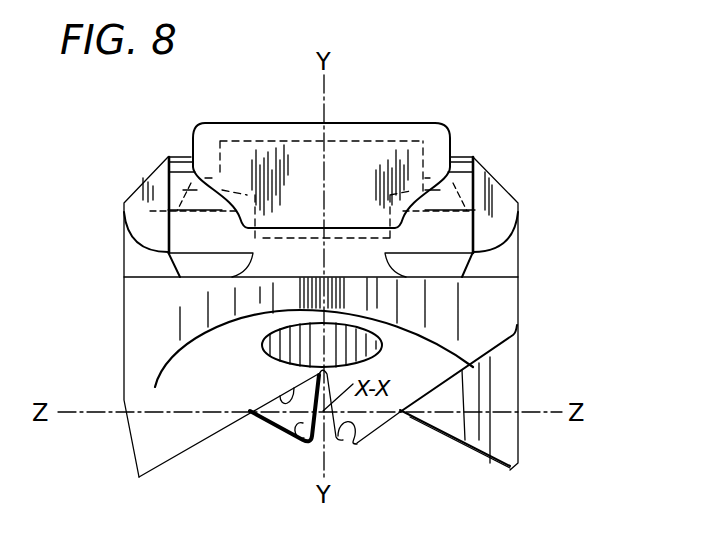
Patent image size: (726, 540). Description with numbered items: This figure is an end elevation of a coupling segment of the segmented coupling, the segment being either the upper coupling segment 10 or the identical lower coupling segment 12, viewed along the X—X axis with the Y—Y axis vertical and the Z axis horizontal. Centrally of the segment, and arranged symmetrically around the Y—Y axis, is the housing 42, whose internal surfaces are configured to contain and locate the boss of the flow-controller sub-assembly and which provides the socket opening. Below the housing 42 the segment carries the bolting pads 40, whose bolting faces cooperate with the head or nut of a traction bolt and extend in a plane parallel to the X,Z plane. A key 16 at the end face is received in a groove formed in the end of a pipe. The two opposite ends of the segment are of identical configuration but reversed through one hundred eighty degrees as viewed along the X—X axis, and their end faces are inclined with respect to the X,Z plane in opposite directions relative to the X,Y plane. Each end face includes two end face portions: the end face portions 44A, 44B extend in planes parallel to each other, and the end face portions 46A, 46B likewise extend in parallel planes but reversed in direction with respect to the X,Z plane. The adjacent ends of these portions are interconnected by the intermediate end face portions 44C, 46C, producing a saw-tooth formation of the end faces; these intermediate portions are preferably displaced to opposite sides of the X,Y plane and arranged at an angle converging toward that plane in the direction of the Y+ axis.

The upper coupling segment 10 is at (371, 317).
The lower coupling segment 12 is at (519, 249).
The key 16 is at (513, 371).
The bolting pad 40 is at (505, 306).
The housing 42 is at (428, 136).
The end face portion 44A is at (270, 425).
The end face portion 44B is at (453, 444).
The intermediate end face portion 44C is at (298, 444).
The end face portion 46A is at (372, 431).
The end face portion 46B is at (182, 455).
The intermediate end face portion 46C is at (347, 445).